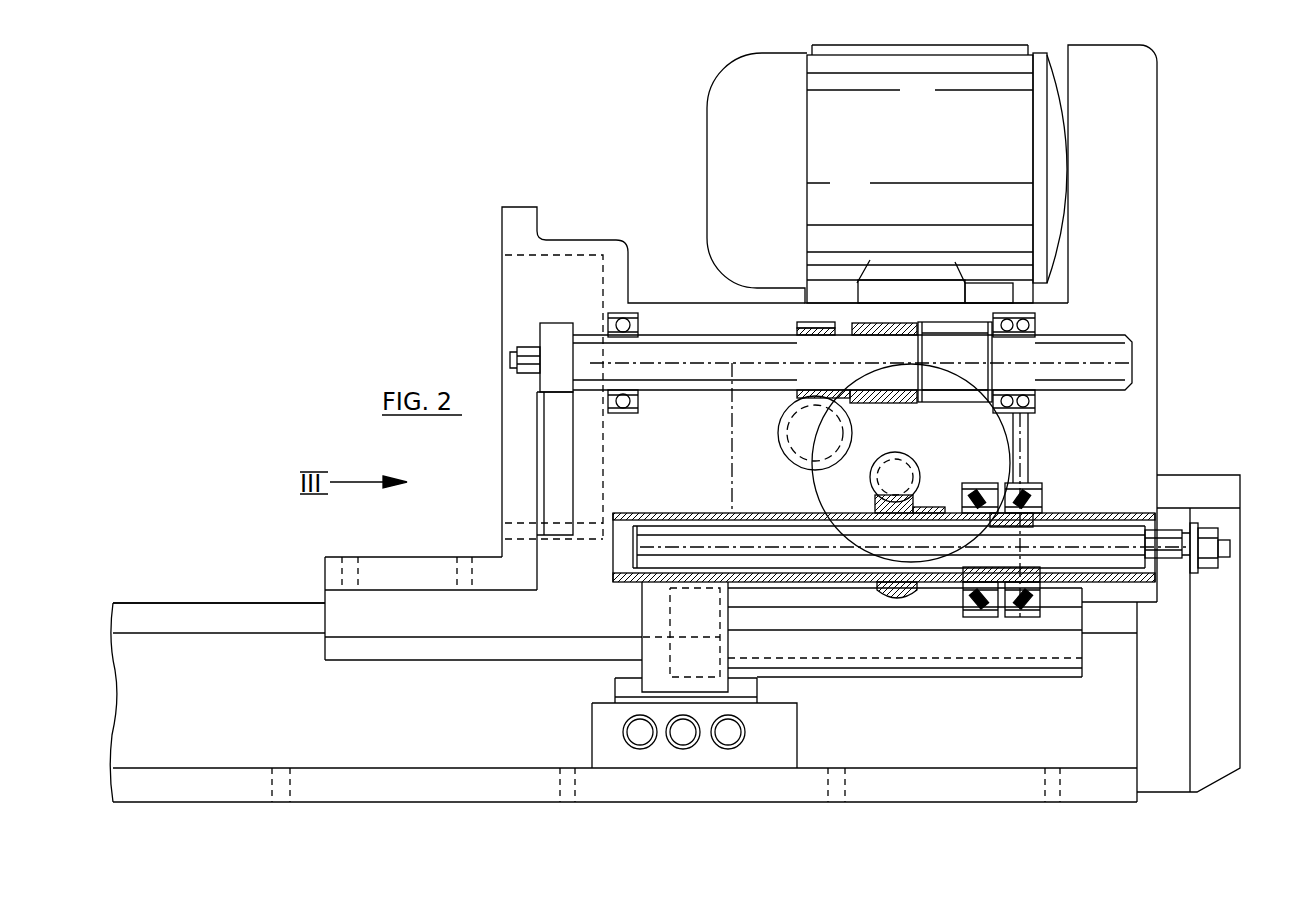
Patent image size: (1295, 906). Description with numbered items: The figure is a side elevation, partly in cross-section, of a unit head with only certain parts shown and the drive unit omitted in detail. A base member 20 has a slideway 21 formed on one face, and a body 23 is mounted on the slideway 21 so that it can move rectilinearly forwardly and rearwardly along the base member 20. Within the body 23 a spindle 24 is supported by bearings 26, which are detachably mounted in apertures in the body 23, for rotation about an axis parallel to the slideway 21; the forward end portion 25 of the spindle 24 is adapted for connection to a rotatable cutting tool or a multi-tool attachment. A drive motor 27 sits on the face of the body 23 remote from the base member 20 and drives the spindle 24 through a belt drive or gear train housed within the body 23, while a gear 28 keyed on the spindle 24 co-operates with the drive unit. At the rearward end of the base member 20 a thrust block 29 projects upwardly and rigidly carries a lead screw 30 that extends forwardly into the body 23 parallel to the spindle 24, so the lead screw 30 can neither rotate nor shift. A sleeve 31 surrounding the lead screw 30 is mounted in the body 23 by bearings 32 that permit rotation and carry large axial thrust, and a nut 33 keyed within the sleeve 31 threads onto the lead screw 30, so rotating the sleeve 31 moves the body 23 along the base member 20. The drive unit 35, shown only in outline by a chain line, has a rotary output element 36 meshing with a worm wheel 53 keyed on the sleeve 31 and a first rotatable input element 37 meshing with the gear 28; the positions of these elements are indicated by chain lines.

The base member 20 is at (208, 600).
The slideway 21 is at (252, 620).
The body 23 is at (588, 236).
The spindle 24 is at (683, 337).
The forward end portion 25 is at (537, 340).
The bearings 26 is at (633, 313).
The drive motor 27 is at (937, 174).
The gear 28 is at (805, 292).
The thrust block 29 is at (1192, 490).
The lead screw 30 is at (1097, 535).
The sleeve 31 is at (647, 513).
The bearings 32 is at (1033, 485).
The nut 33 is at (1043, 521).
The drive unit 35 is at (732, 458).
The rotary output element 36 is at (913, 460).
The first rotatable input element 37 is at (777, 430).
The worm wheel 53 is at (893, 600).